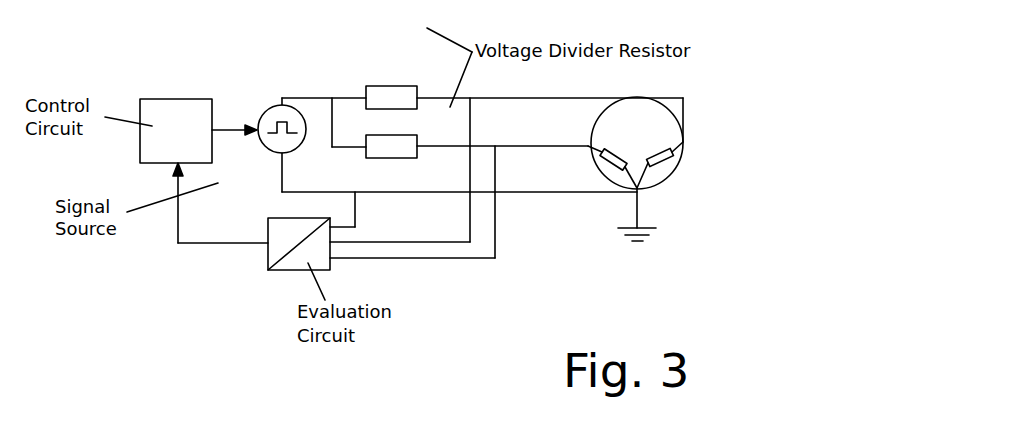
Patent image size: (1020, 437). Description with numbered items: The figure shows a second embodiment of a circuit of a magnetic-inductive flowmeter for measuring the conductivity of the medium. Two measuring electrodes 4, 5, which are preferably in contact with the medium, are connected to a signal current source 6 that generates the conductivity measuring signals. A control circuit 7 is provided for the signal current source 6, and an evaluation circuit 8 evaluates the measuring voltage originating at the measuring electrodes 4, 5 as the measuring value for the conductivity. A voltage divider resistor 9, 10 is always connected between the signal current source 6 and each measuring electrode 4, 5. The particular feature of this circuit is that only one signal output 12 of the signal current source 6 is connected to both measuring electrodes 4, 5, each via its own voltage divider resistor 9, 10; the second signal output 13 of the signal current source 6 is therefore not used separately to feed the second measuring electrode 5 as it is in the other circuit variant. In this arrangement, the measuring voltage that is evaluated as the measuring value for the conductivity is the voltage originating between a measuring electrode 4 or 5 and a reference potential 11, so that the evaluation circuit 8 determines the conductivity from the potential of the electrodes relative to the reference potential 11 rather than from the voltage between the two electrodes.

The measuring electrode 4 is at (671, 143).
The measuring electrode 5 is at (587, 145).
The signal current source 6 is at (260, 122).
The control circuit 7 is at (166, 145).
The evaluation circuit 8 is at (268, 240).
The voltage divider resistor 9 is at (388, 86).
The voltage divider resistor 10 is at (398, 134).
The reference potential 11 is at (620, 227).
The signal output 12 is at (278, 105).
The second signal output 13 is at (282, 175).